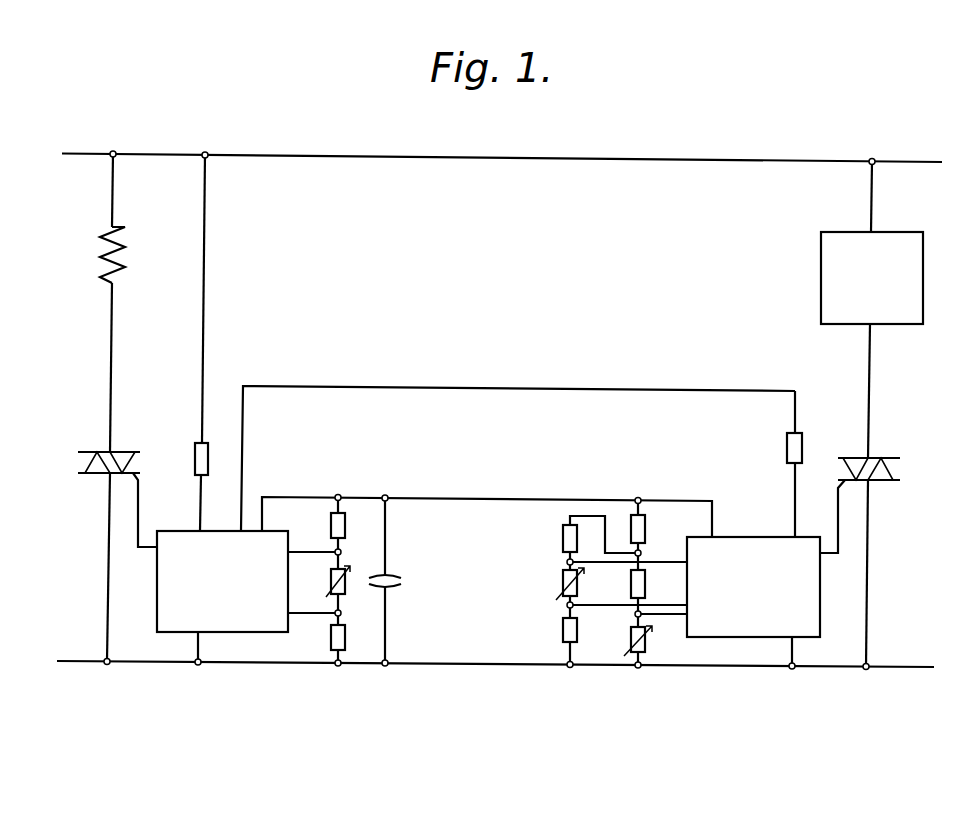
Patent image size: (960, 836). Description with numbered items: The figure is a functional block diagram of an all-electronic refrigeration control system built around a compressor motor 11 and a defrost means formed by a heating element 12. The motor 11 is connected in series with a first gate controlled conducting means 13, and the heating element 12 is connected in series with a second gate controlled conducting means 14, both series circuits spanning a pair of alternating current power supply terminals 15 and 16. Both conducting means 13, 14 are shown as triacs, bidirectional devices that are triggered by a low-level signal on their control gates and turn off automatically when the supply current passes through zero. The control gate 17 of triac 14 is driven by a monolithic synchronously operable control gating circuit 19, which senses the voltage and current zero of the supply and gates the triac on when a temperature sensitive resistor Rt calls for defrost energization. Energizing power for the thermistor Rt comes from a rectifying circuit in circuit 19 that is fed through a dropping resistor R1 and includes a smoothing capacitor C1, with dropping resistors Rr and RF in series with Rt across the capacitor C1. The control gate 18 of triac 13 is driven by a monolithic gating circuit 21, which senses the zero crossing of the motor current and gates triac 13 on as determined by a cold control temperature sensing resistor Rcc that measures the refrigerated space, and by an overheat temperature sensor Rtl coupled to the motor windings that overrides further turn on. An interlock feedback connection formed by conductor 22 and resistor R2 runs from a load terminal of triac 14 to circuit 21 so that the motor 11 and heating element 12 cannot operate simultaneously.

The compressor motor 11 is at (919, 268).
The heating element 12 is at (123, 282).
The gate controlled conducting means 13 is at (879, 462).
The gate controlled conducting means 14 is at (122, 449).
The alternating current power supply terminal 15 is at (520, 157).
The alternating current power supply terminal 16 is at (468, 663).
The control gate element 17 is at (140, 483).
The control gate element 18 is at (837, 487).
The monolithic synchronously operable control gating circuit 19 is at (157, 600).
The monolithic gating circuit 21 is at (745, 638).
The conductor 22 is at (322, 388).
The dropping resistor R1 is at (214, 342).
The resistor R2 is at (787, 443).
The dropping resistor RF is at (345, 522).
The temperature sensitive resistor Rt is at (346, 582).
The dropping resistor Rr is at (345, 638).
The overheat temperature sensor Rtl is at (562, 569).
The cold control temperature sensing resistor Rcc is at (645, 647).
The smoothing capacitor C1 is at (392, 579).